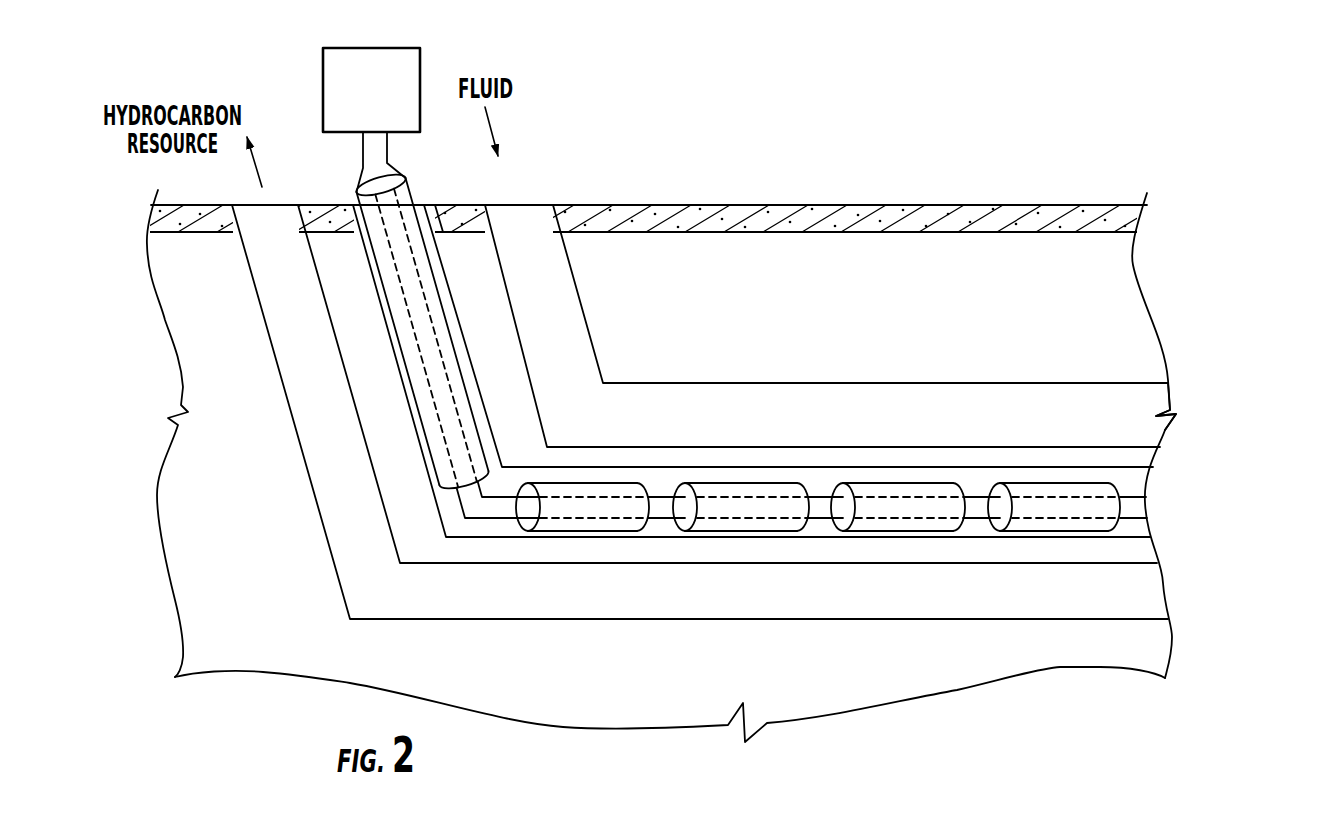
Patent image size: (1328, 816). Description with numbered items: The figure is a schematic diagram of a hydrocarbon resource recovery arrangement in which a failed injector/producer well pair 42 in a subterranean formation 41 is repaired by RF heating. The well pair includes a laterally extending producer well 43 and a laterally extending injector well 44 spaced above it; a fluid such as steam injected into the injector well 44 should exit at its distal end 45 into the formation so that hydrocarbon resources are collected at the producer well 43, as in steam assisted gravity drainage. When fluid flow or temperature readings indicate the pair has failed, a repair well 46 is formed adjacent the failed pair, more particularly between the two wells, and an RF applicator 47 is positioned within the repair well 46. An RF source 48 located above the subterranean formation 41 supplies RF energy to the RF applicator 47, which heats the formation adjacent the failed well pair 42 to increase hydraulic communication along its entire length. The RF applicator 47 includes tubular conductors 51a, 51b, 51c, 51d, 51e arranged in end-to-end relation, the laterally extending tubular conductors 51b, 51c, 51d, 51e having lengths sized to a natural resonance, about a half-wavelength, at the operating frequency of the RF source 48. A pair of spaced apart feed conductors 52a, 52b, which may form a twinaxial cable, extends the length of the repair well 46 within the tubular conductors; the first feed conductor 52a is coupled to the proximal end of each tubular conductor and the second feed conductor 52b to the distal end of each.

The subterranean formation 41 is at (785, 260).
The failed injector/producer well pair 42 is at (798, 442).
The laterally extending producer well 43 is at (427, 605).
The laterally extending injector well 44 is at (1108, 407).
The distal end 45 is at (1160, 398).
The repair well 46 is at (423, 213).
The RF applicator 47 is at (352, 196).
The RF source 48 is at (362, 48).
The tubular conductor 51a is at (437, 313).
The tubular conductor 51b is at (592, 523).
The tubular conductor 51c is at (760, 523).
The tubular conductor 51d is at (937, 522).
The tubular conductor 51e is at (1032, 532).
The first feed conductor 52a is at (388, 145).
The second feed conductor 52b is at (711, 520).